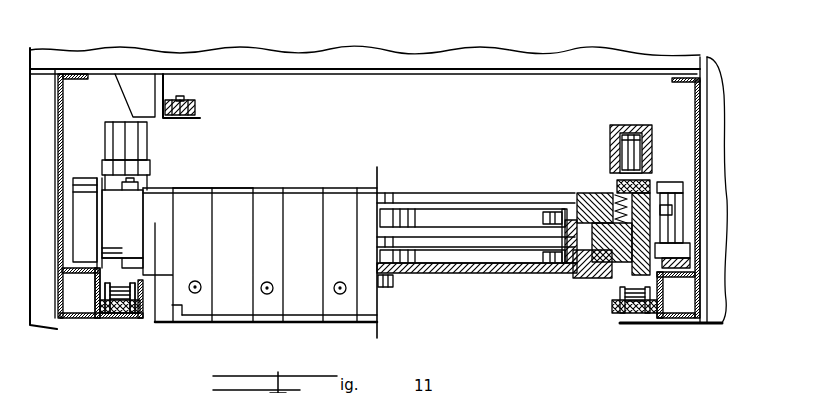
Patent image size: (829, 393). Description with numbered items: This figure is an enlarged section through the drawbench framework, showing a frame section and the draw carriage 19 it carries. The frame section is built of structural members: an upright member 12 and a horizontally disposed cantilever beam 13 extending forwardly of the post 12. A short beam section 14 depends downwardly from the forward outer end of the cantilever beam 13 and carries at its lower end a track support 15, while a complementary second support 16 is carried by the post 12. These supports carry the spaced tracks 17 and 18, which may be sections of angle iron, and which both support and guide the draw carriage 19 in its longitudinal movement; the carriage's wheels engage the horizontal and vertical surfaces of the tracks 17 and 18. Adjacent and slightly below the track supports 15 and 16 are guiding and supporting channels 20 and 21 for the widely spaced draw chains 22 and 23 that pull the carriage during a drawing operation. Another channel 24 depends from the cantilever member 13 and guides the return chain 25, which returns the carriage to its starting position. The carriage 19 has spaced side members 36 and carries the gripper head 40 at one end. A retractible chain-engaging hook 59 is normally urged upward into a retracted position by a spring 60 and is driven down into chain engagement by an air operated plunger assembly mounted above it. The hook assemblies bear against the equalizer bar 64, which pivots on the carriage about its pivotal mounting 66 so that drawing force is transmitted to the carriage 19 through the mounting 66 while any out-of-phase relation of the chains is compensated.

The upright member 12 is at (718, 117).
The cantilever beam 13 is at (385, 60).
The short beam section 14 is at (42, 116).
The track support 15 is at (80, 280).
The second support 16 is at (678, 282).
The track 17 is at (102, 252).
The track 18 is at (688, 264).
The draw carriage 19 is at (245, 178).
The guiding and supporting channel 20 is at (105, 320).
The guiding and supporting channel 21 is at (608, 318).
The draw chain 22 is at (130, 322).
The draw chain 23 is at (648, 318).
The channel 24 is at (180, 116).
The return chain 25 is at (192, 100).
The side member 36 is at (583, 192).
The gripper head 40 is at (316, 239).
The chain-engaging hook 59 is at (595, 282).
The spring 60 is at (652, 186).
The equalizer bar 64 is at (491, 247).
The pivotal mounting 66 is at (388, 290).